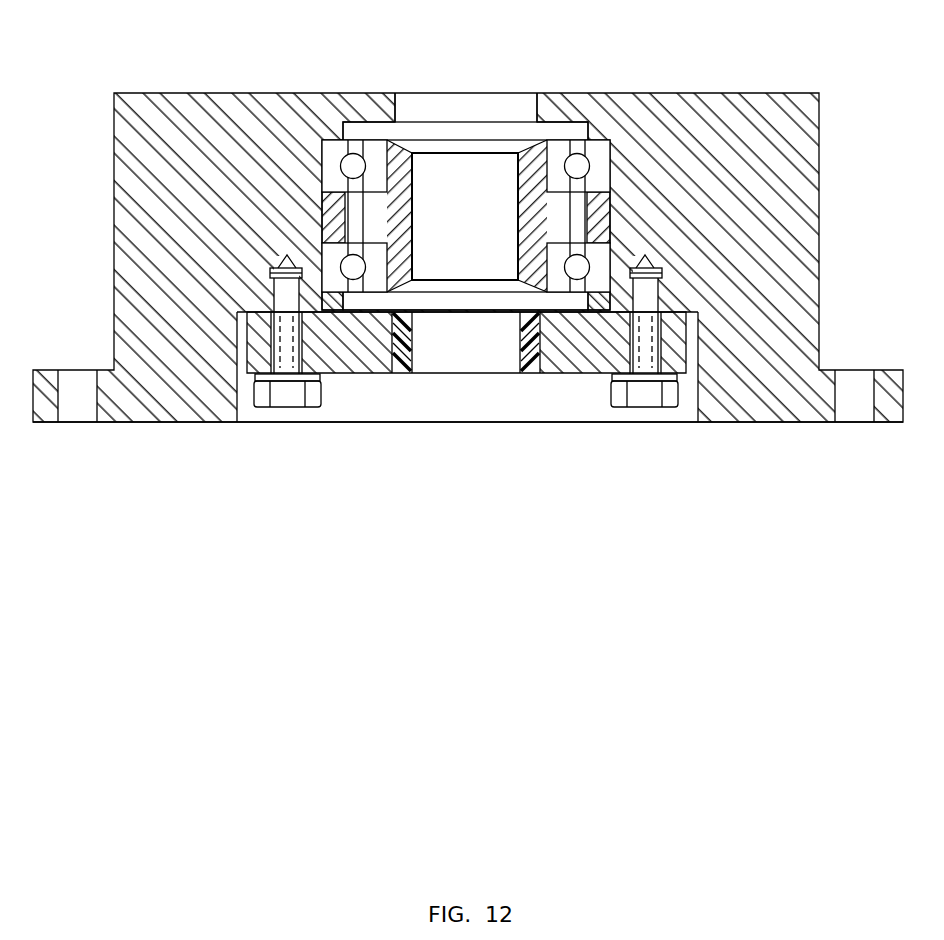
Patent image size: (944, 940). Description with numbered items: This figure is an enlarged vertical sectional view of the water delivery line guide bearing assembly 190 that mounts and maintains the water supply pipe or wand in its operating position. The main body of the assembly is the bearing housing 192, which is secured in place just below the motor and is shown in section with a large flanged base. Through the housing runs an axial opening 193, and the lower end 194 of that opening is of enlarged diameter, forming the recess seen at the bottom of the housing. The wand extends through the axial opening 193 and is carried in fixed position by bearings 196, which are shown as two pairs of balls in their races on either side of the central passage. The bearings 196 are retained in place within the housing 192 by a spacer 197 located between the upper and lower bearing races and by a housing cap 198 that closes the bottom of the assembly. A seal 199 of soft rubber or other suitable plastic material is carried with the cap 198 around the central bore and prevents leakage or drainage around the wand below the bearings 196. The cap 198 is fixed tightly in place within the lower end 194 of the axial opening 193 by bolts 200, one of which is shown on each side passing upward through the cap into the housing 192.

The guide bearing assembly 190 is at (770, 80).
The bearing housing 192 is at (250, 95).
The axial opening 193 is at (420, 100).
The lower end 194 is at (685, 413).
The bearings 196 is at (610, 243).
The spacer 197 is at (330, 220).
The housing cap 198 is at (360, 372).
The seal 199 is at (525, 368).
The bolts 200 is at (268, 408).